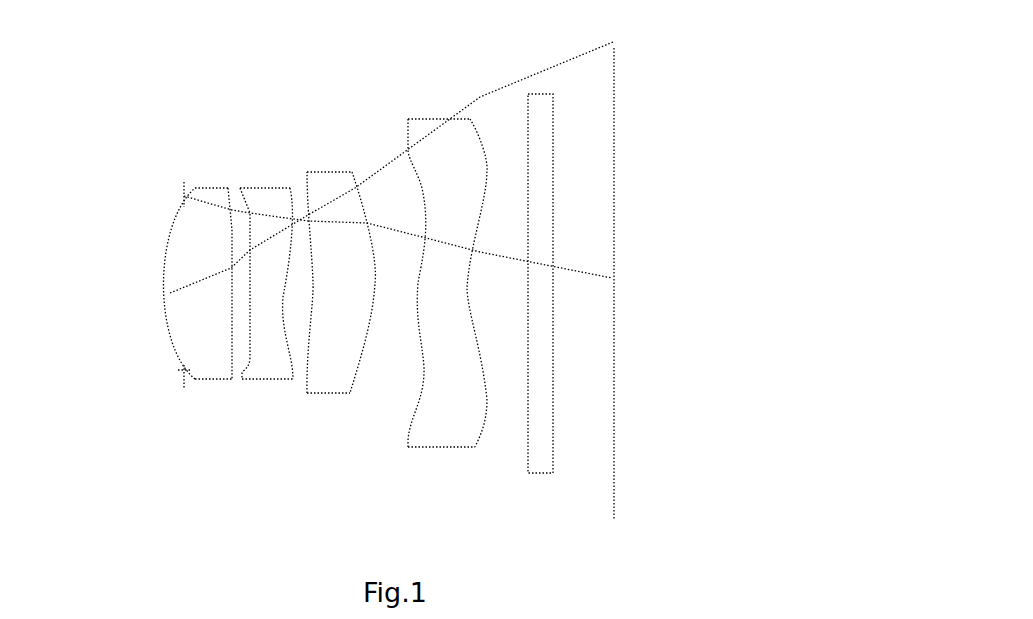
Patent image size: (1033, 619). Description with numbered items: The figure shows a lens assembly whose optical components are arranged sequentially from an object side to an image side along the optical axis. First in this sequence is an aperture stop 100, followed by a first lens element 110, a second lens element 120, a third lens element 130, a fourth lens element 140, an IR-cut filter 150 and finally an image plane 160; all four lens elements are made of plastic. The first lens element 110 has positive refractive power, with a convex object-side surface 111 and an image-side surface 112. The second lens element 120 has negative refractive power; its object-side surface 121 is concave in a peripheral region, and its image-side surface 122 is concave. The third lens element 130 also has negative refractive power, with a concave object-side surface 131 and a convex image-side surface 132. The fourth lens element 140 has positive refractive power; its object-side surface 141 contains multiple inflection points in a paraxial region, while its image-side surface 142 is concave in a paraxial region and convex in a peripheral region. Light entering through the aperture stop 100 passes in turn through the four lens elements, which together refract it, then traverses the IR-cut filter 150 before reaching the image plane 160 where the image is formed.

The aperture stop 100 is at (183, 195).
The first lens element 110 is at (213, 186).
The object-side surface of the first lens element 111 is at (177, 342).
The image-side surface of the first lens element 112 is at (234, 342).
The second lens element 120 is at (268, 186).
The object-side surface of the second lens element 121 is at (246, 367).
The image-side surface of the second lens element 122 is at (291, 352).
The third lens element 130 is at (327, 171).
The object-side surface of the third lens element 131 is at (306, 387).
The image-side surface of the third lens element 132 is at (354, 378).
The fourth lens element 140 is at (437, 117).
The object-side surface of the fourth lens element 141 is at (420, 387).
The image-side surface of the fourth lens element 142 is at (484, 421).
The IR-cut filter 150 is at (545, 91).
The image plane 160 is at (617, 78).